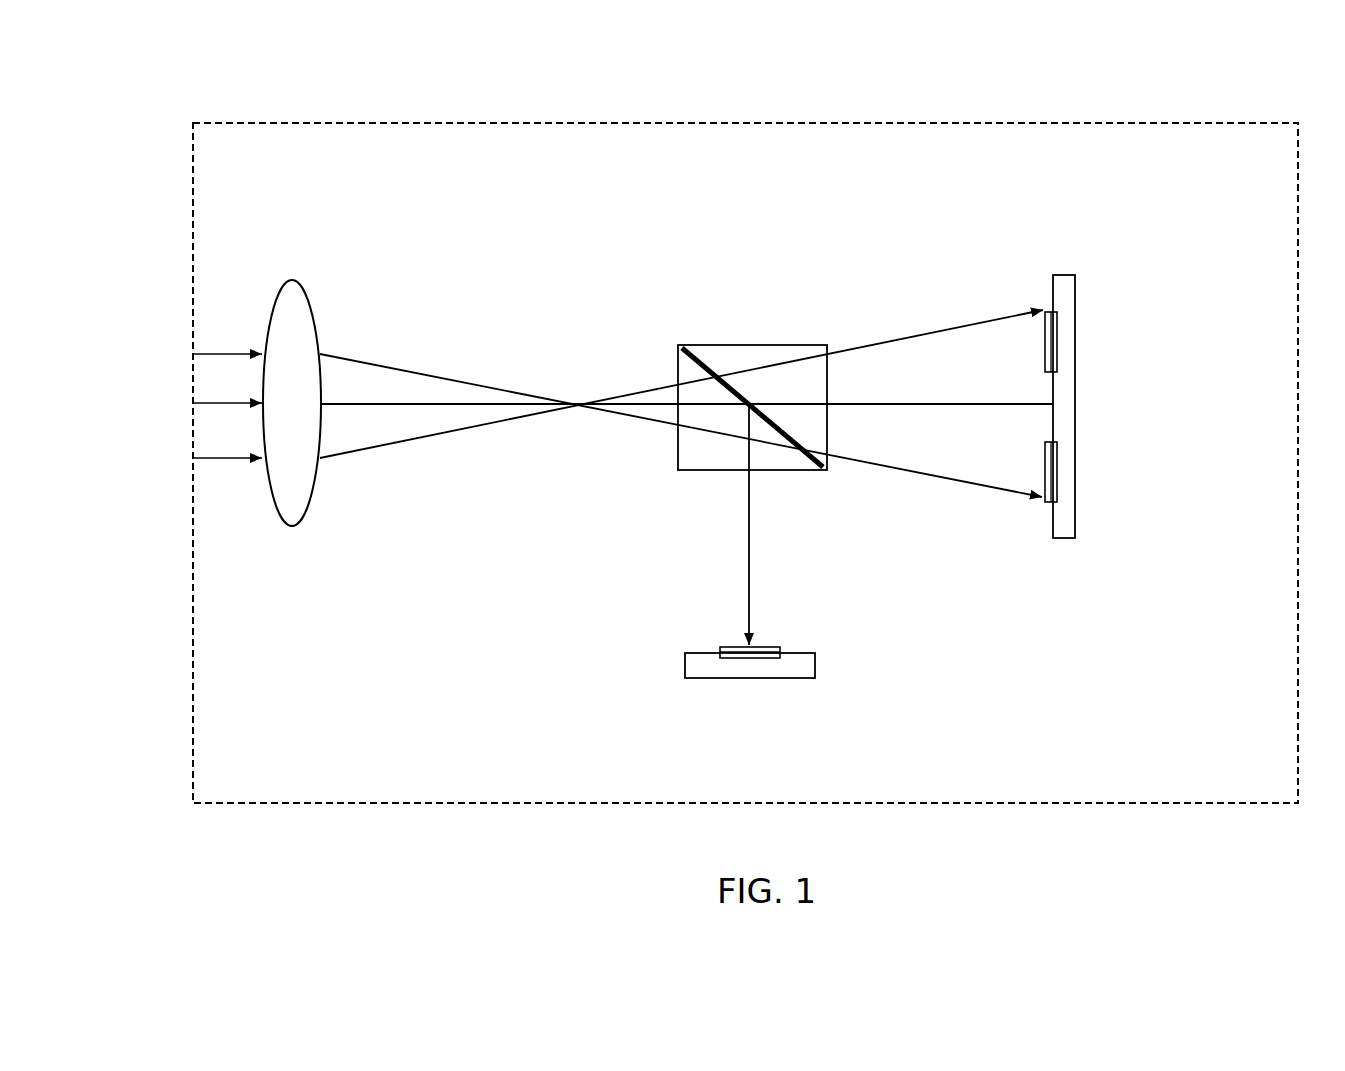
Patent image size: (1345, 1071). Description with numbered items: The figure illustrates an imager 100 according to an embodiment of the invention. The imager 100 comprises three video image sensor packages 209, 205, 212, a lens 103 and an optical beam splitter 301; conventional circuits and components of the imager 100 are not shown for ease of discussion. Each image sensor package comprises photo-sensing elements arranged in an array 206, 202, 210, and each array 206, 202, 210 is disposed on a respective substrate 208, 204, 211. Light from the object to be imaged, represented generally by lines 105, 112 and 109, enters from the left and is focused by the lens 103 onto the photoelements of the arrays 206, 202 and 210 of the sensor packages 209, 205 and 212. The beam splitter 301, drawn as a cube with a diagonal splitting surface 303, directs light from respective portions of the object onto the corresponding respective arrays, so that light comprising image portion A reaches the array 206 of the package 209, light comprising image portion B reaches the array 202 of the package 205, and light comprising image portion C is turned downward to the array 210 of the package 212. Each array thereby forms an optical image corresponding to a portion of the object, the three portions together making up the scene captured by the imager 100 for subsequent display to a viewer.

The imager 100 is at (1232, 88).
The lens 103 is at (302, 288).
The line representing light from object 105 is at (230, 354).
The line representing light from object 109 is at (230, 458).
The line representing light from object 112 is at (230, 404).
The optical beam splitter 301 is at (775, 345).
The beam splitting surface 303 is at (682, 348).
The substrate 204 is at (1063, 540).
The array 206 is at (1045, 345).
The array 202 is at (1045, 470).
The substrate 208 is at (1075, 370).
The video image sensor package 209 is at (1113, 293).
The video image sensor package 205 is at (1132, 507).
The array 210 is at (730, 647).
The substrate 211 is at (795, 678).
The video image sensor package 212 is at (681, 715).